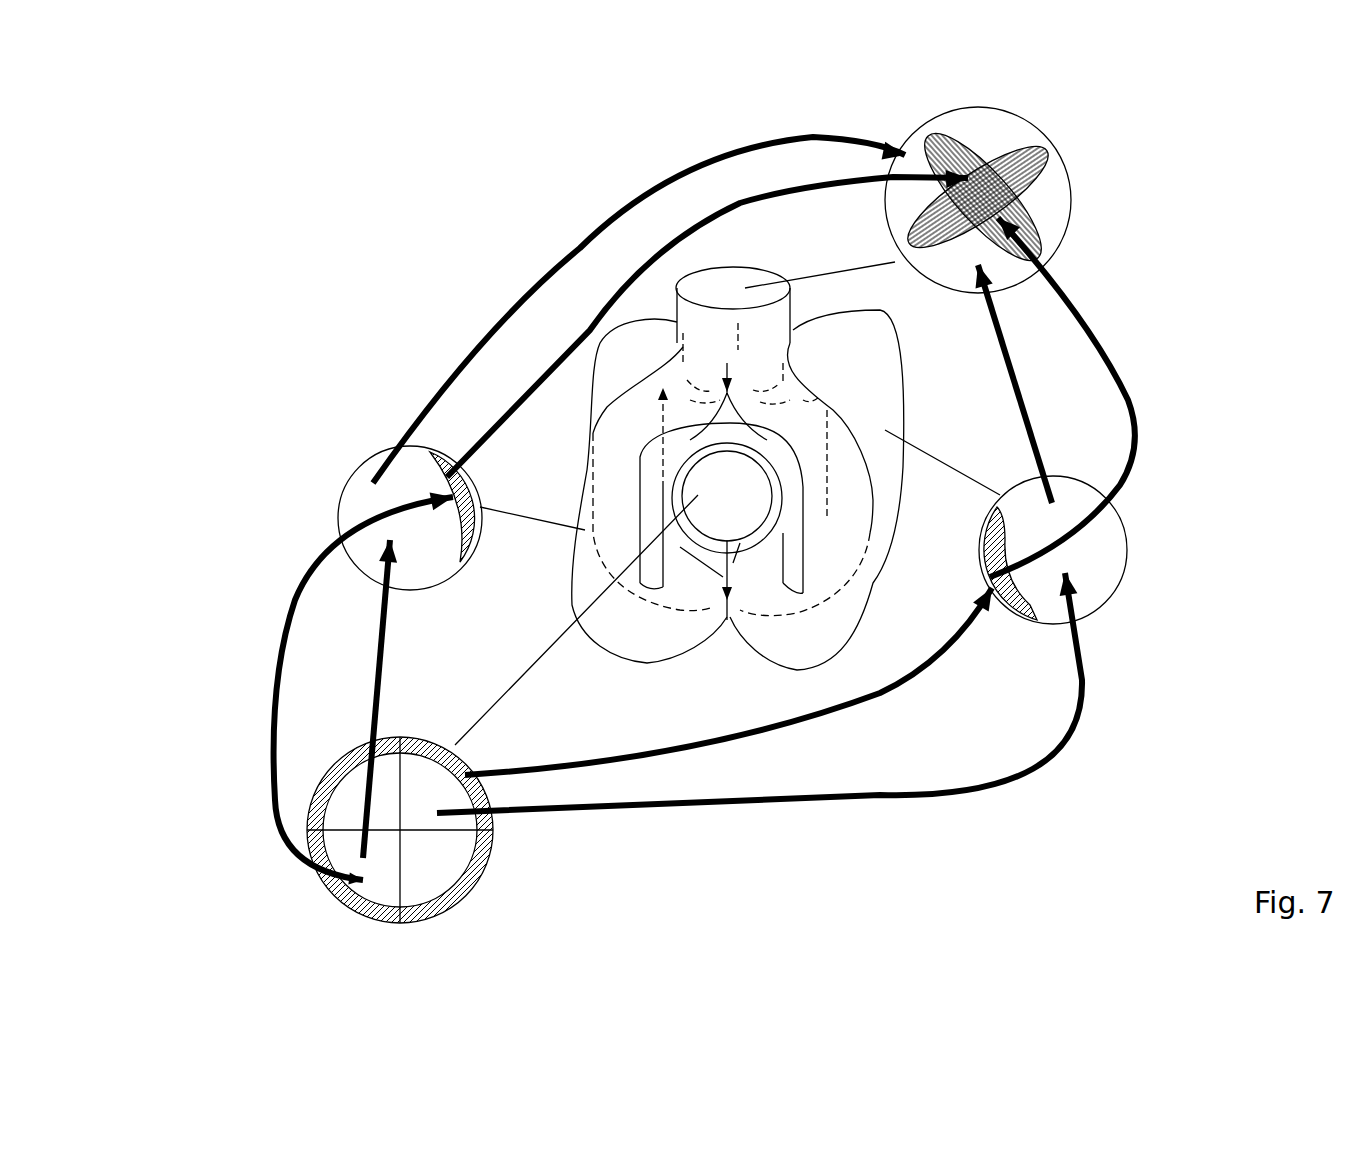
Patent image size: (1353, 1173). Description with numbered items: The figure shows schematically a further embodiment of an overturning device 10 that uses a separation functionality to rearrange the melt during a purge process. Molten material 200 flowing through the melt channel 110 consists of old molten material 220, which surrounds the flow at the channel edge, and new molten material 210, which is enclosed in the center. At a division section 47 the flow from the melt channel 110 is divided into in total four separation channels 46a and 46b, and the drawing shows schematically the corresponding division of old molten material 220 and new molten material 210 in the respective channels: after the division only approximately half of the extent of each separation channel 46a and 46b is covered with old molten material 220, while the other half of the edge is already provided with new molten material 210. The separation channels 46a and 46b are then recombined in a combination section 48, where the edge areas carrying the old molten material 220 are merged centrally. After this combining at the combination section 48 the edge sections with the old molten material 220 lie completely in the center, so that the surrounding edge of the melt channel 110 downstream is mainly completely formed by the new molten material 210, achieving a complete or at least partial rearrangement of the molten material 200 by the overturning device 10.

The overturning device 10 is at (178, 218).
The combination section 48 is at (770, 332).
The division section 47 is at (727, 620).
The separation channel 46a is at (838, 637).
The separation channel 46b is at (580, 567).
The melt channel 110 is at (1072, 207).
The molten material 200 is at (340, 883).
The new molten material 210 is at (1053, 175).
The old molten material 220 is at (948, 140).